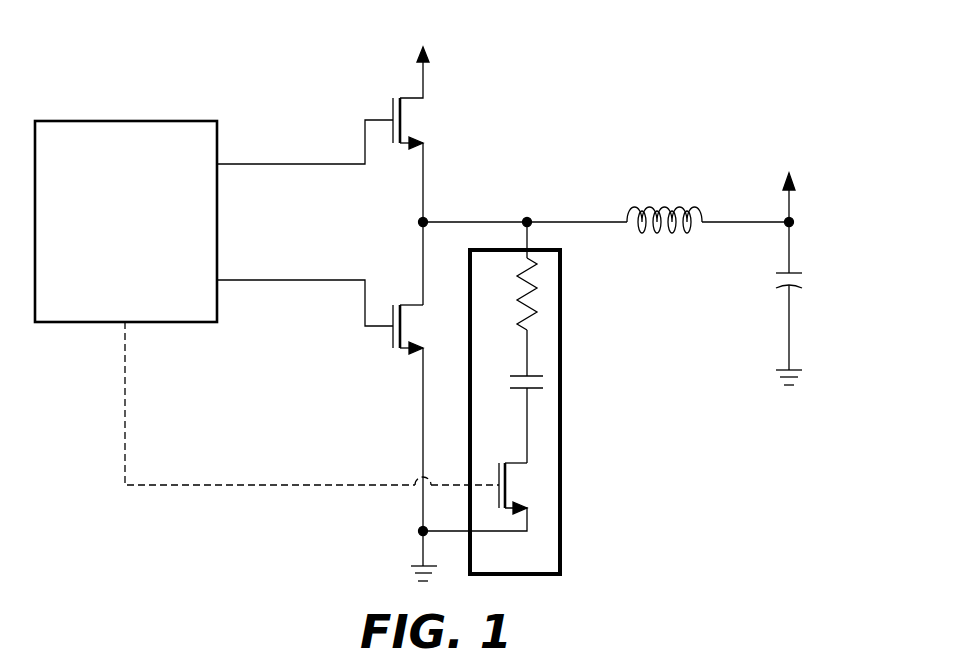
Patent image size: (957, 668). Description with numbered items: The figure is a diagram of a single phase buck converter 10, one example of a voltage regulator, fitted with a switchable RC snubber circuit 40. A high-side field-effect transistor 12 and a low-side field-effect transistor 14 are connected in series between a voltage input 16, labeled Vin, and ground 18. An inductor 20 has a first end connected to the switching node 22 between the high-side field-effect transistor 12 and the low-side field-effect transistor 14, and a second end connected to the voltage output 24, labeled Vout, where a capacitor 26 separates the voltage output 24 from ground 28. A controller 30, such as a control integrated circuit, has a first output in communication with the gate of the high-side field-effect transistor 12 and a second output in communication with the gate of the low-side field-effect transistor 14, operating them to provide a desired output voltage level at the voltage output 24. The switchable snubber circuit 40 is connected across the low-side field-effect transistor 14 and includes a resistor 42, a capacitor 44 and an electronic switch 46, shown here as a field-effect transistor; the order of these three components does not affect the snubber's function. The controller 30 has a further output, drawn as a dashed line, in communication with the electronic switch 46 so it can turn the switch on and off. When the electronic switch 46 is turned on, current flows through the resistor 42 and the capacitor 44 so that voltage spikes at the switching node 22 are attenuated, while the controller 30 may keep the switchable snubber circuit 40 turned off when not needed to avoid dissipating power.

The single phase buck converter 10 is at (272, 50).
The high-side field-effect transistor 12 is at (393, 108).
The low-side field-effect transistor 14 is at (393, 335).
The voltage input 16 is at (442, 32).
The ground 18 is at (411, 566).
The inductor 20 is at (628, 211).
The switching node 22 is at (468, 218).
The voltage output 24 is at (762, 158).
The capacitor 26 is at (803, 275).
The ground 28 is at (803, 372).
The controller 30 is at (112, 248).
The switchable snubber circuit 40 is at (560, 445).
The resistor 42 is at (537, 293).
The capacitor 44 is at (543, 385).
The electronic switch 46 is at (518, 483).